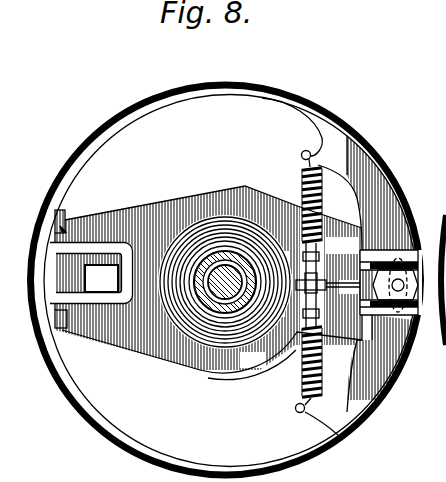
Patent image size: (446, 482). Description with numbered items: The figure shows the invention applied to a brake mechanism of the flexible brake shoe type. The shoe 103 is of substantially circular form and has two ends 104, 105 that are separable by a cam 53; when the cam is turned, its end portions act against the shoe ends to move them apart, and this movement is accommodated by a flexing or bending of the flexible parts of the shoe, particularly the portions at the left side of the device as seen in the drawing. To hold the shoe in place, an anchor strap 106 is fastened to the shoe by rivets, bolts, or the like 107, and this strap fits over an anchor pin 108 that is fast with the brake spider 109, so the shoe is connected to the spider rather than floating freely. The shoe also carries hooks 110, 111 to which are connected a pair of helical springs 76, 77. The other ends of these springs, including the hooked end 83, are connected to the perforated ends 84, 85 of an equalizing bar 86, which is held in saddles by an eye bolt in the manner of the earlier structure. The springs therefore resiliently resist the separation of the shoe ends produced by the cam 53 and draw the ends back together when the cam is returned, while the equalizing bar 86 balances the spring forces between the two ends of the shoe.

The shoe 103 is at (189, 84).
The brake spider 109 is at (183, 188).
The anchor strap 106 is at (106, 216).
The rivets, bolts, or the like 107 is at (66, 230).
The anchor pin 108 is at (101, 278).
The equalizing bar 86 is at (270, 356).
The hook 110 is at (301, 157).
The helical spring 76 is at (301, 194).
The helical spring 77 is at (301, 386).
The hook 111 is at (296, 411).
The perforated end of equalizing bar 84 is at (296, 285).
The perforated end of equalizing bar 85 is at (303, 258).
The hooked end 83 is at (303, 313).
The cam 53 is at (372, 285).
The end of shoe 104 is at (368, 258).
The end of shoe 105 is at (362, 338).